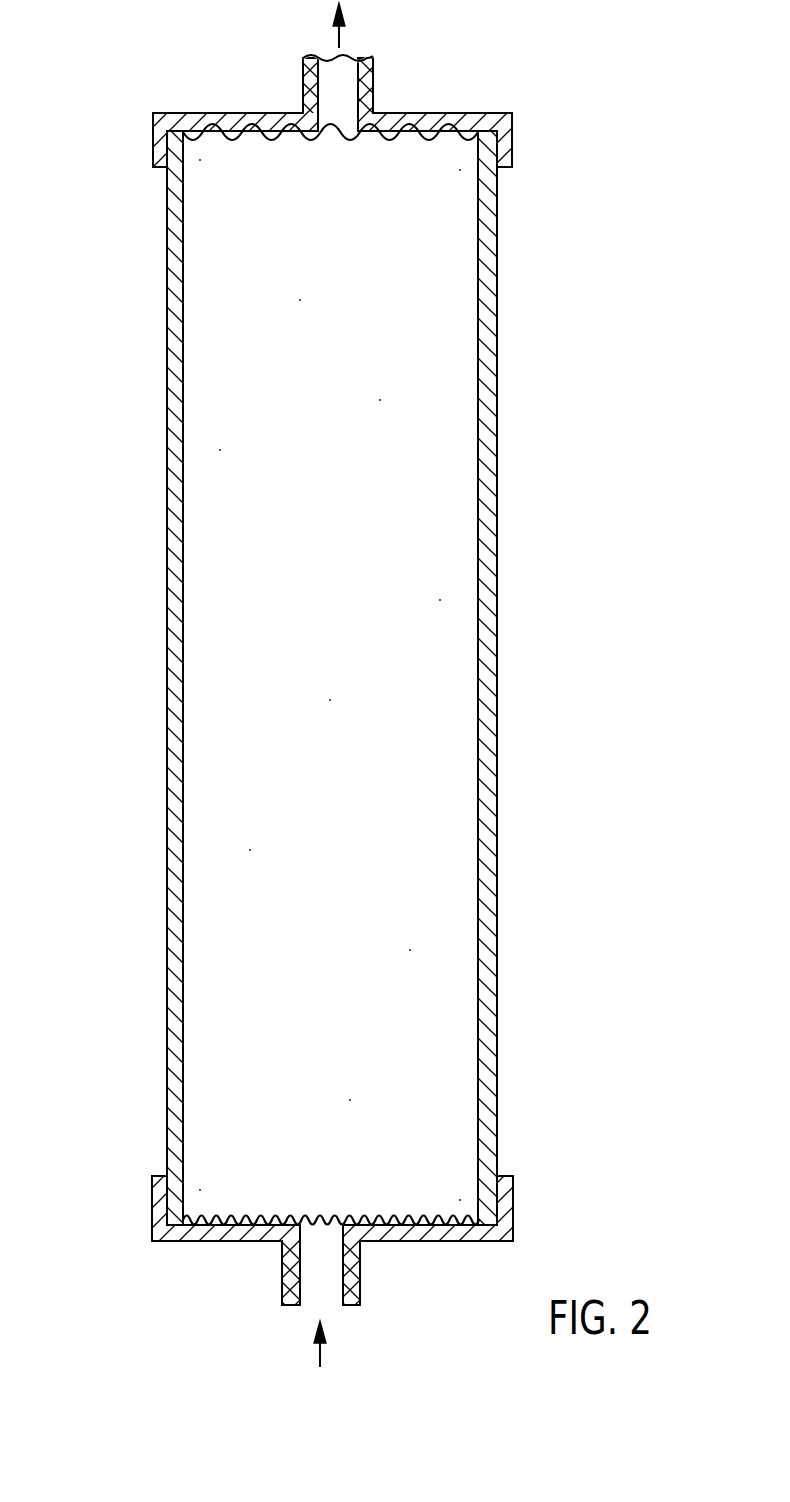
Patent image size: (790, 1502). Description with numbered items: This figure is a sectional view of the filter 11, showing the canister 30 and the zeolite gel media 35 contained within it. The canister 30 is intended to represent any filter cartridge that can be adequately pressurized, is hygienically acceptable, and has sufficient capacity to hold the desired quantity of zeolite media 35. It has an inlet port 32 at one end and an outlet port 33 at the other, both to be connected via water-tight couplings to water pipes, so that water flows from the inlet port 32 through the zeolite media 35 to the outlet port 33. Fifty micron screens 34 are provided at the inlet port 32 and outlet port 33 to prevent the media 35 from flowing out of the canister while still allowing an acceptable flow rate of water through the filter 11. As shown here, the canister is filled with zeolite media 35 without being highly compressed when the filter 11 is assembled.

The filter 11 is at (347, 685).
The canister 30 is at (168, 560).
The inlet port 32 is at (360, 1278).
The outlet port 33 is at (373, 77).
The fifty micron screens 34 is at (268, 142).
The zeolite gel media 35 is at (461, 467).